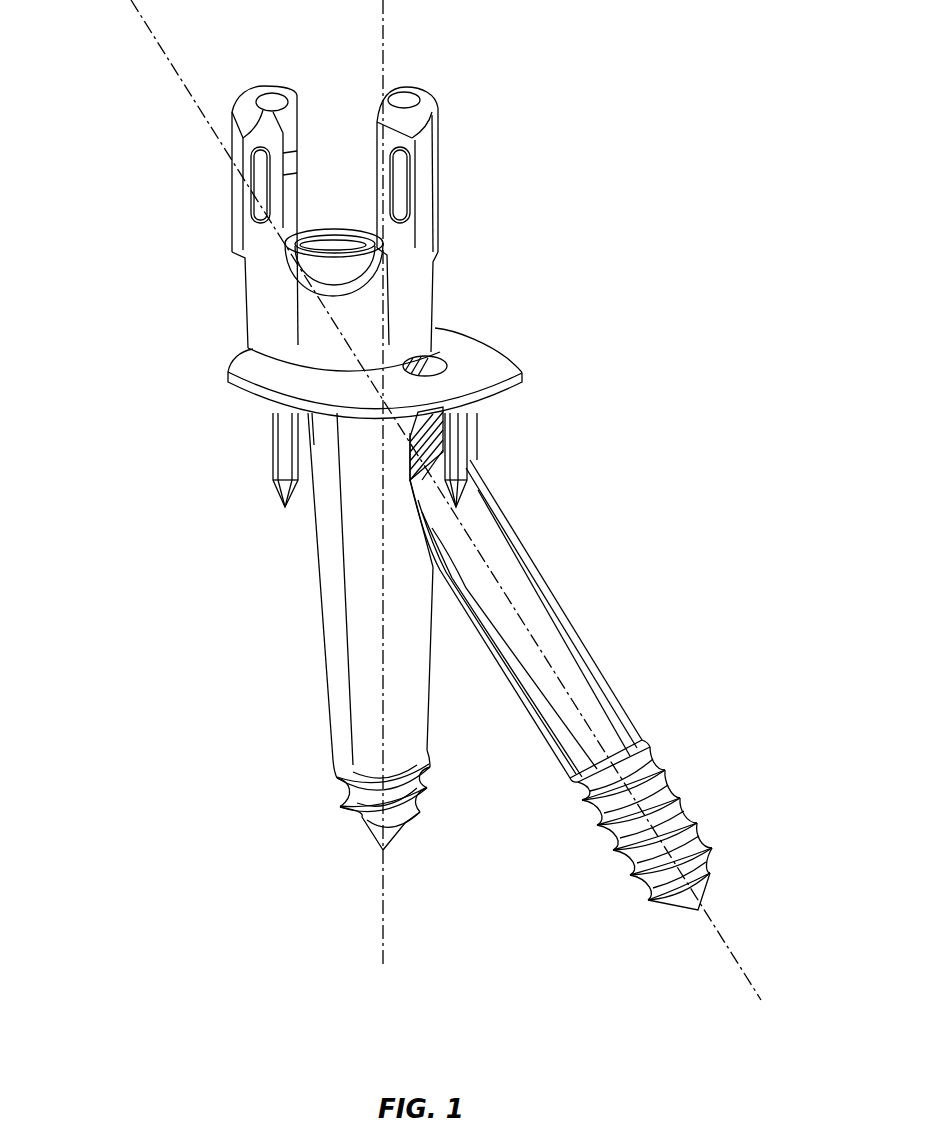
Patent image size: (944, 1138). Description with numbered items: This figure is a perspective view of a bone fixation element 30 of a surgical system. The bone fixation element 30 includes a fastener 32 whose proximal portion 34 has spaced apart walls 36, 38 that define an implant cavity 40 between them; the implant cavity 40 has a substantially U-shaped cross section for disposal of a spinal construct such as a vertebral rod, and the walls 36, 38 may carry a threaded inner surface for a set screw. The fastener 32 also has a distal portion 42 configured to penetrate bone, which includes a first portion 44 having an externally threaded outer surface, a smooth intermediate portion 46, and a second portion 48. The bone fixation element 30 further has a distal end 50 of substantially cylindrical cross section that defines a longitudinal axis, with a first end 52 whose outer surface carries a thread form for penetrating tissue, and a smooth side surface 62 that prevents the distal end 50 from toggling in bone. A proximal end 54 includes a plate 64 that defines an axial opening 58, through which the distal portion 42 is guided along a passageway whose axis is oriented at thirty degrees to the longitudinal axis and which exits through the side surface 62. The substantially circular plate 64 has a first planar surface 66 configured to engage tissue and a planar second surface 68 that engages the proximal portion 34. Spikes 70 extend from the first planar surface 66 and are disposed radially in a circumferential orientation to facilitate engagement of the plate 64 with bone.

The bone fixation element 30 is at (746, 219).
The fastener 32 is at (613, 512).
The proximal portion 34 is at (160, 188).
The wall 36 is at (250, 102).
The wall 38 is at (427, 98).
The implant cavity 40 is at (320, 224).
The distal portion 42 is at (485, 722).
The first portion 44 is at (427, 445).
The smooth intermediate portion 46 is at (573, 642).
The second portion 48 is at (688, 820).
The distal end 50 is at (257, 678).
The first end 52 is at (363, 814).
The proximal end 54 is at (232, 446).
The axial opening 58 is at (433, 355).
The side surface 62 is at (328, 525).
The plate 64 is at (197, 366).
The first planar surface 66 is at (248, 395).
The second surface 68 is at (482, 358).
The spike 70 is at (283, 467).